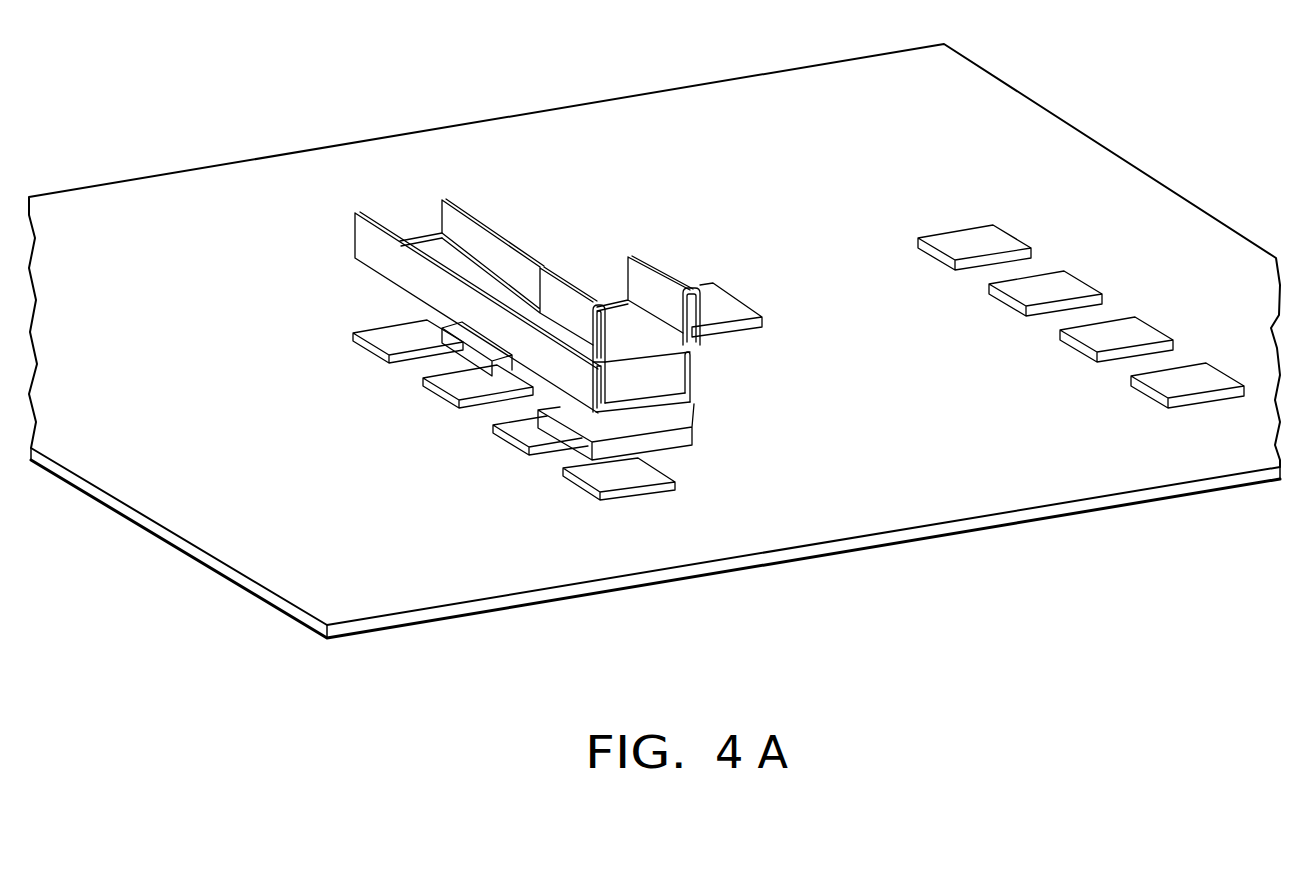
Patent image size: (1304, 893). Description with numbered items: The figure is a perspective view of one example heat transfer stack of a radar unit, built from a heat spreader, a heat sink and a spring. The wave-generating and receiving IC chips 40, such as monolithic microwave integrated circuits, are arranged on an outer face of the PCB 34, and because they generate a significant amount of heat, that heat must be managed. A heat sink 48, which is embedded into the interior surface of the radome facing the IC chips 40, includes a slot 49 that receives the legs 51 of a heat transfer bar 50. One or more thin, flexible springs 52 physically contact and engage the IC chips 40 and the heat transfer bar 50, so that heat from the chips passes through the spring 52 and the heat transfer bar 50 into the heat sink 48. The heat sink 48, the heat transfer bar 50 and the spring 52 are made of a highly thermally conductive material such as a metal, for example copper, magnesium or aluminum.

The PCB 34 is at (255, 449).
The IC chips 40 is at (520, 430).
The heat sink 48 is at (728, 306).
The slot 49 is at (606, 307).
The heat transfer bar 50 is at (640, 393).
The legs 51 is at (606, 400).
The spring 52 is at (667, 438).